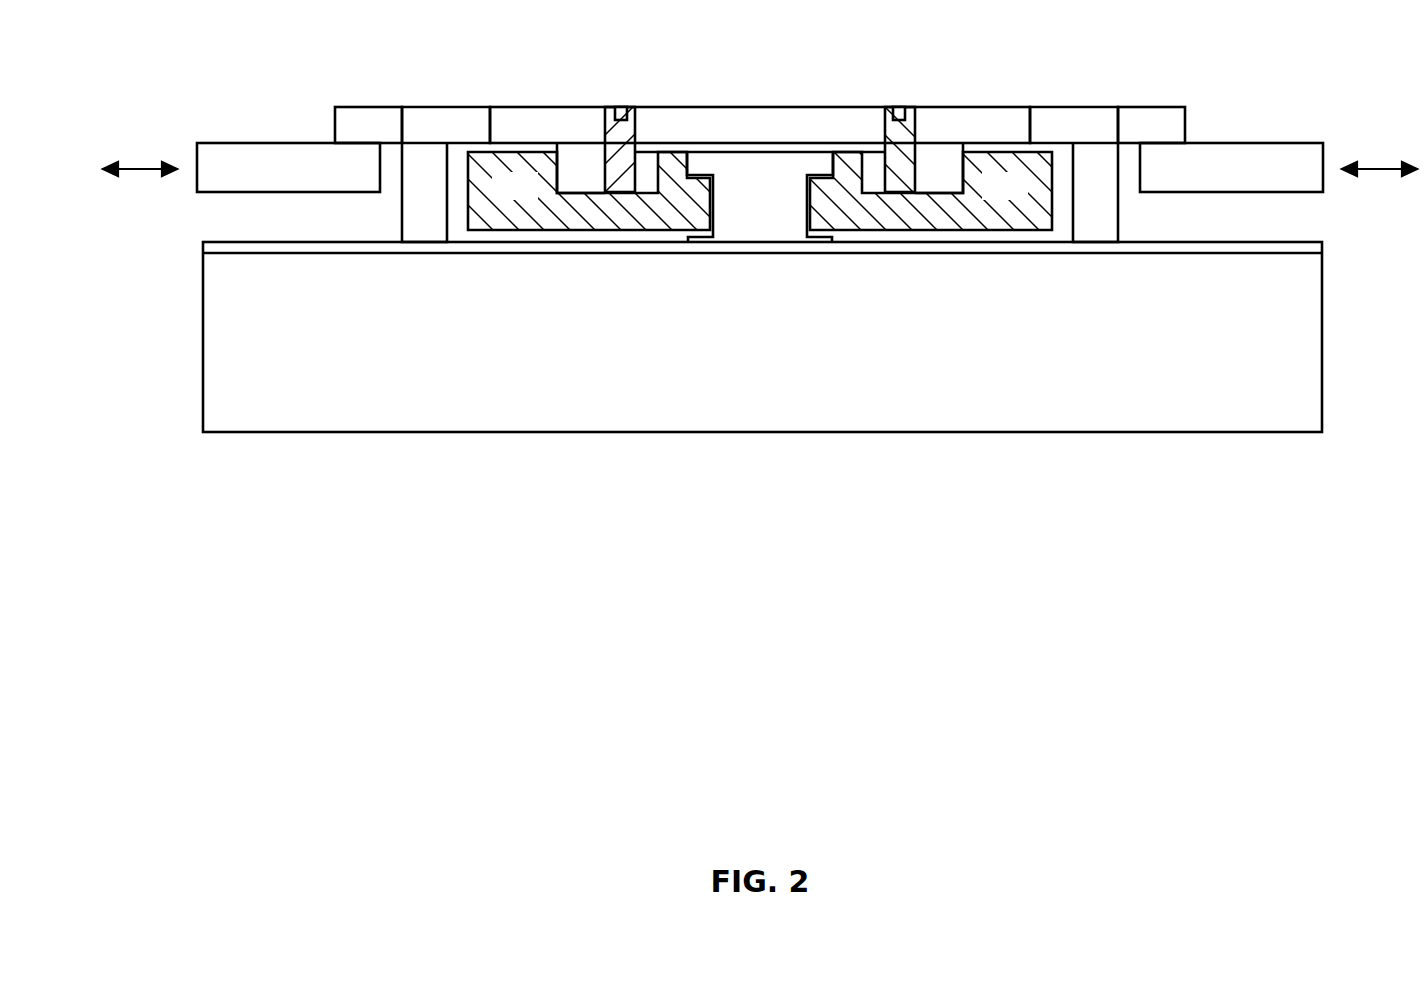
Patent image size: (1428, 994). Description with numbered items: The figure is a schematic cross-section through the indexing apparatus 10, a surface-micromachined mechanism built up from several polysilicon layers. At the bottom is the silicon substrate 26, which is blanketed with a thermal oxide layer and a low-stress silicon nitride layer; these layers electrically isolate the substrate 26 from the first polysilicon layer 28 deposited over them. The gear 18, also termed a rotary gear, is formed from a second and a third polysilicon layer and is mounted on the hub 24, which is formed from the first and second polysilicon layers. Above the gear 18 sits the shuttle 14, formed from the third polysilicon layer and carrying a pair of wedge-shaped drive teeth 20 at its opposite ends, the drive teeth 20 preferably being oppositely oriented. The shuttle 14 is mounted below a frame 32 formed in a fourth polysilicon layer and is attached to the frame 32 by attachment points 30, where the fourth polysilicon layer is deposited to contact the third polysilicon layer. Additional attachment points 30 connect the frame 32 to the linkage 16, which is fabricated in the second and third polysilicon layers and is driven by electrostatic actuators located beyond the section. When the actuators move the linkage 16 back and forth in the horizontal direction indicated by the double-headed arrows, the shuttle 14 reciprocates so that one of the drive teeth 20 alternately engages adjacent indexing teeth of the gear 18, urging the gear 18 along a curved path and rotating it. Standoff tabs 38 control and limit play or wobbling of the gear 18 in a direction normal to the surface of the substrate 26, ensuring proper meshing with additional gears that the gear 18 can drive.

The microelectromechanical device 10 is at (1037, 513).
The shuttle 14 is at (635, 153).
The linkage 16 is at (223, 143).
The gear 18 is at (497, 201).
The drive teeth 20 is at (570, 155).
The hub 24 is at (777, 208).
The silicon substrate 26 is at (250, 392).
The first polysilicon layer 28 is at (215, 246).
The attachment points 30 is at (622, 106).
The frame 32 is at (358, 107).
The standoff tabs 38 is at (447, 107).